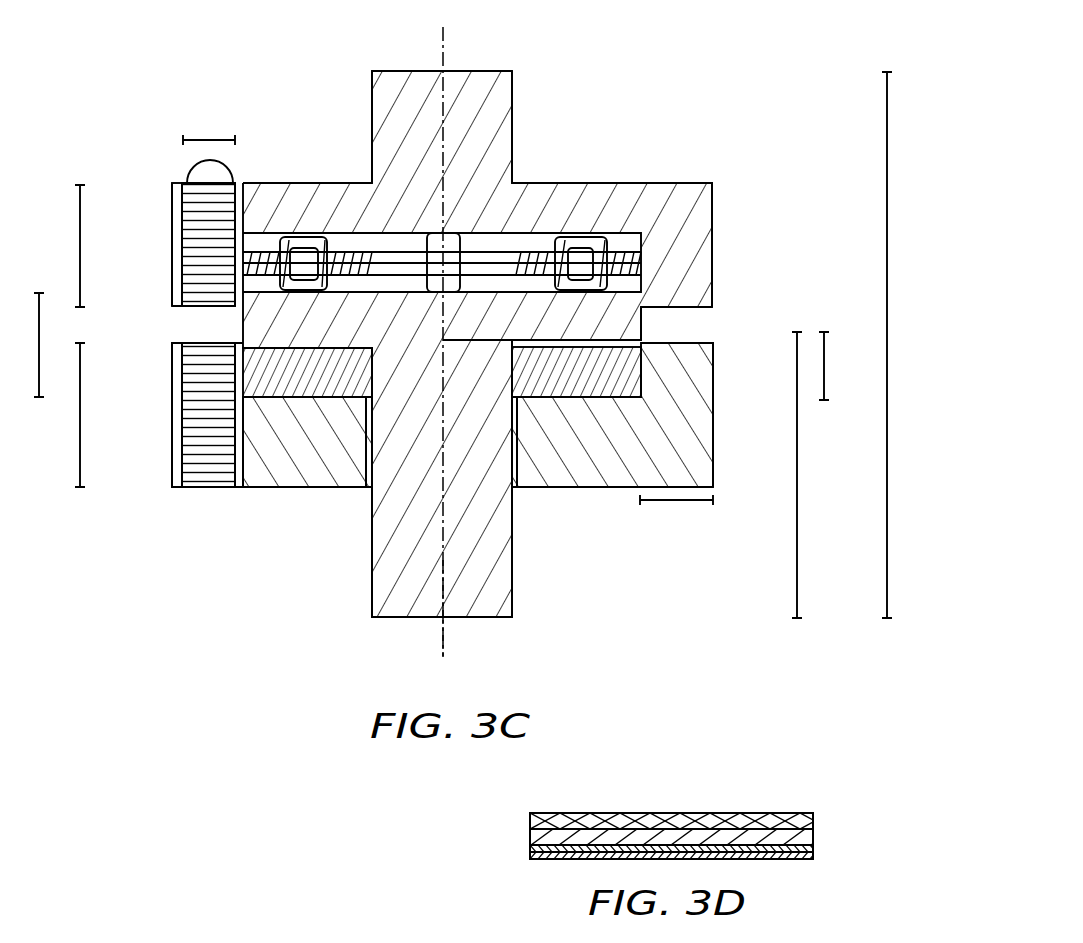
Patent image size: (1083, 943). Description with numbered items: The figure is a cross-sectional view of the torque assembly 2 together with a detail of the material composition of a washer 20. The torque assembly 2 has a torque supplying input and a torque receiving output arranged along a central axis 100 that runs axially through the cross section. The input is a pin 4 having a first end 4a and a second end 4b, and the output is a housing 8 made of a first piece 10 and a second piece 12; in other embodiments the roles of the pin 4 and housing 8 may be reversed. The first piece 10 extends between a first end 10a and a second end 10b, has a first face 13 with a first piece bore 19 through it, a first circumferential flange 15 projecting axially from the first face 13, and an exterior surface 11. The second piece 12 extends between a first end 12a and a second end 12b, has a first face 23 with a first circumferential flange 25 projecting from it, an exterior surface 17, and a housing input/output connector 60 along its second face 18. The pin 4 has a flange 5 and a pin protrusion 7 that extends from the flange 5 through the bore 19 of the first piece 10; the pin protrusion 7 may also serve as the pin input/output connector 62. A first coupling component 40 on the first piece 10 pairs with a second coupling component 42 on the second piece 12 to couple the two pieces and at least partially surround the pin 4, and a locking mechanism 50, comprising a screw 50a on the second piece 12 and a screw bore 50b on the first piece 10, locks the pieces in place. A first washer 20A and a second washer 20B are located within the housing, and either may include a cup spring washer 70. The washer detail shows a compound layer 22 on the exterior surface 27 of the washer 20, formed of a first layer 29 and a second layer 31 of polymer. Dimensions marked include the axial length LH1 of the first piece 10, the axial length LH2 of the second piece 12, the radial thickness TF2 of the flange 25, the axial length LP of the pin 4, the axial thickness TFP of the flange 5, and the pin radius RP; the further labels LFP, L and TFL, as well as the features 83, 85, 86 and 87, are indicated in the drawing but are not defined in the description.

In FIG. 3C, the torque assembly 2 is at (738, 111).
In FIG. 3C, the pin 4 is at (641, 332).
In FIG. 3C, the first end of pin 4a is at (512, 618).
In FIG. 3C, the second end of pin 4b is at (243, 309).
In FIG. 3C, the flange 5 is at (178, 338).
In FIG. 3C, the pin protrusion 7 is at (380, 548).
In FIG. 3C, the housing 8 is at (172, 378).
In FIG. 3C, the first piece 10 is at (713, 478).
In FIG. 3C, the first end of first piece 10a is at (178, 343).
In FIG. 3C, the second end of first piece 10b is at (175, 490).
In FIG. 3C, the exterior surface 11 is at (590, 398).
In FIG. 3C, the second piece 12 is at (567, 182).
In FIG. 3C, the first end of second piece 12a is at (178, 305).
In FIG. 3C, the second end of second piece 12b is at (513, 71).
In FIG. 3C, the first face 13 is at (303, 403).
In FIG. 3C, the first circumferential flange 15 is at (713, 400).
In FIG. 3C, the exterior surface 17 is at (515, 182).
In FIG. 3C, the second face 18 is at (293, 182).
In FIG. 3C, the first piece bore 19 is at (348, 442).
In FIG. 3C, the first washer 20A is at (247, 397).
In FIG. 3C, the second washer 20B is at (243, 262).
In FIG. 3C, the first face 23 is at (285, 238).
In FIG. 3C, the first circumferential flange 25 is at (641, 263).
In FIG. 3C, the exterior surface 27 is at (372, 595).
In FIG. 3D, the exterior surface 27 is at (532, 852).
In FIG. 3C, the first coupling component 40 is at (713, 457).
In FIG. 3C, the second coupling component 42 is at (713, 222).
In FIG. 3C, the locking mechanism 50 is at (172, 247).
In FIG. 3C, the screw 50a is at (176, 185).
In FIG. 3C, the screw bore 50b is at (218, 490).
In FIG. 3C, the housing input/output connector 60 is at (455, 70).
In FIG. 3C, the pin input/output connector 62 is at (480, 620).
In FIG. 3C, the cup spring washer 70 is at (243, 356).
In FIG. 3C, the bottom edge 83 is at (713, 487).
In FIG. 3C, the flange lower edge 85 is at (713, 304).
In FIG. 3C, the upper mesh layer 86 is at (713, 344).
In FIG. 3C, the top edge 87 is at (485, 70).
In FIG. 3C, the central axis 100 is at (440, 640).
In FIG. 3C, the radial thickness of first circumferential flange TF2 is at (200, 140).
In FIG. 3C, the axial length of second piece LH2 is at (80, 205).
In FIG. 3C, the plate length LFP is at (39, 400).
In FIG. 3C, the axial length of first piece LH1 is at (82, 470).
In FIG. 3C, the axial thickness of flange TFP is at (826, 336).
In FIG. 3C, the axial length of pin LP is at (798, 512).
In FIG. 3C, the overall length L is at (887, 418).
In FIG. 3C, the lower flange thickness TFL is at (678, 504).
In FIG. 3C, the radius of pin RP is at (527, 350).
In FIG. 3D, the washer 20 is at (800, 783).
In FIG. 3D, the second layer 31 is at (532, 822).
In FIG. 3D, the first layer 29 is at (532, 838).
In FIG. 3D, the compound layer 22 is at (813, 845).